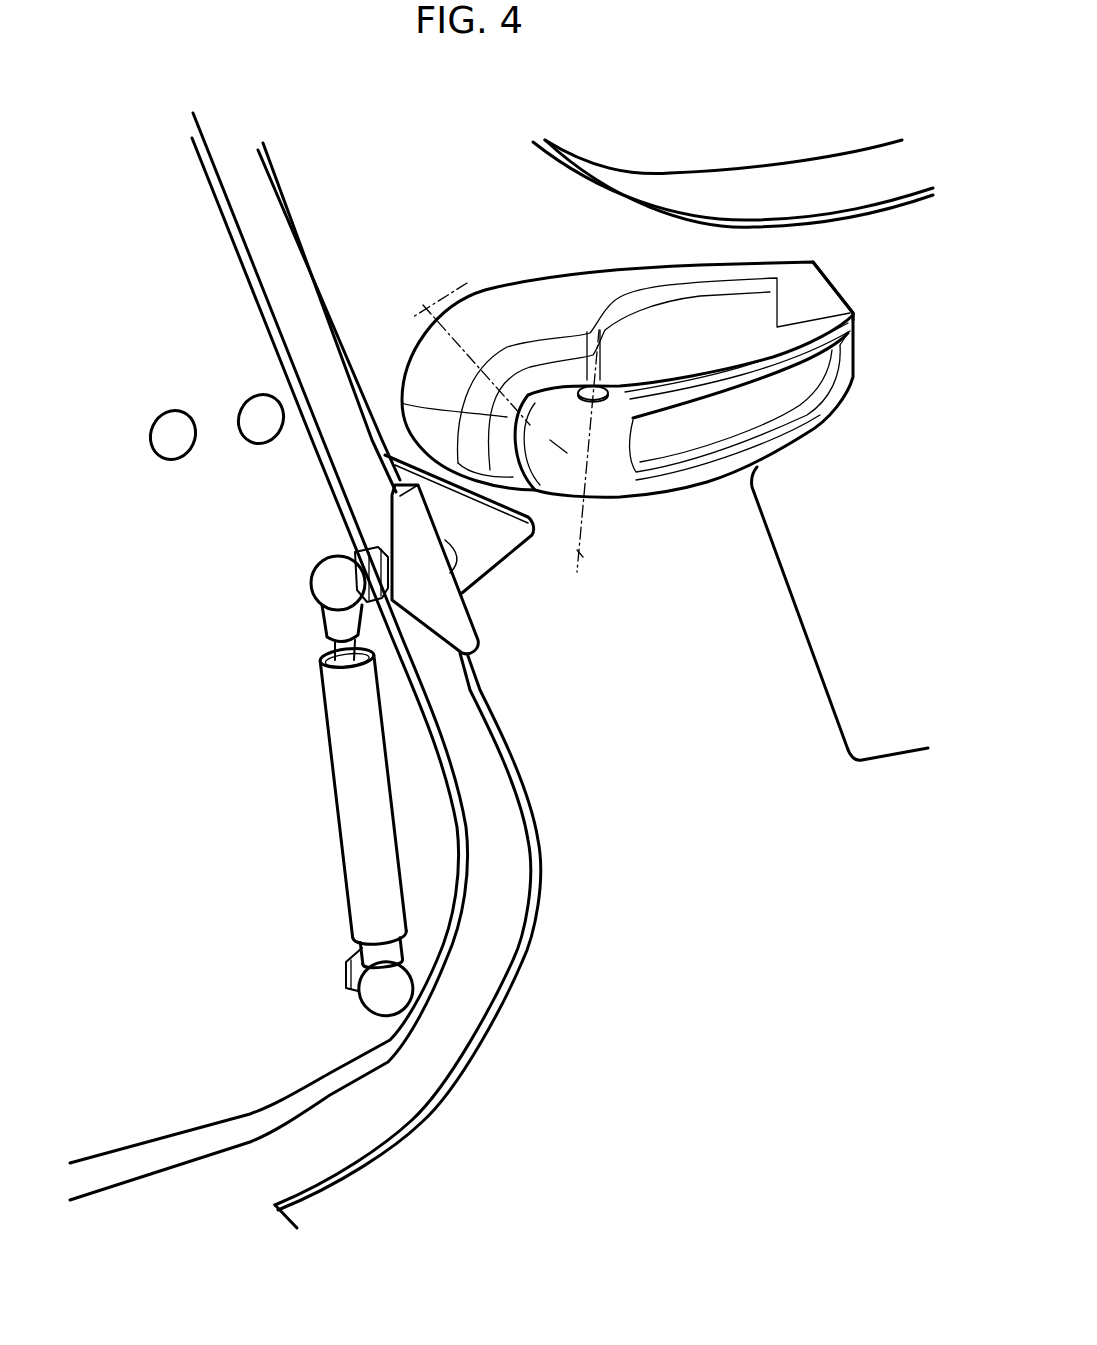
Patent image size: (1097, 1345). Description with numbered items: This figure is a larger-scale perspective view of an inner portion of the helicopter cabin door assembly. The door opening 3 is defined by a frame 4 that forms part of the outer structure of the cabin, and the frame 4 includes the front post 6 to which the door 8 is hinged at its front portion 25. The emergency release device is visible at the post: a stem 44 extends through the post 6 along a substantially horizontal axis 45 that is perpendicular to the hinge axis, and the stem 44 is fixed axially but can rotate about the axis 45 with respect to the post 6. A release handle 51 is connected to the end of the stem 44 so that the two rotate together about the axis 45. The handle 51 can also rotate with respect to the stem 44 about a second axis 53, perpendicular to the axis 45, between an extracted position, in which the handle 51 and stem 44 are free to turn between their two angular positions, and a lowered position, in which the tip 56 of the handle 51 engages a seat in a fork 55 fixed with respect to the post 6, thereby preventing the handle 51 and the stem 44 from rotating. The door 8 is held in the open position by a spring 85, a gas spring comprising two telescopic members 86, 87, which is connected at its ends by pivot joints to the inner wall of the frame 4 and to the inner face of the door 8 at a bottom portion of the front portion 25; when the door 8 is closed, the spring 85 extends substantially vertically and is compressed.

The door opening 3 is at (210, 1112).
The frame 4 is at (304, 1143).
The front post 6 is at (313, 215).
The door 8 is at (138, 1113).
The front portion 25 is at (227, 328).
The stem 44 is at (400, 408).
The axis 45 is at (474, 275).
The release handle 51 is at (803, 440).
The axis 53 is at (588, 572).
The fork 55 is at (853, 308).
The tip 56 is at (853, 348).
The spring 85 is at (333, 763).
The telescopic member 86 is at (343, 647).
The telescopic member 87 is at (371, 872).